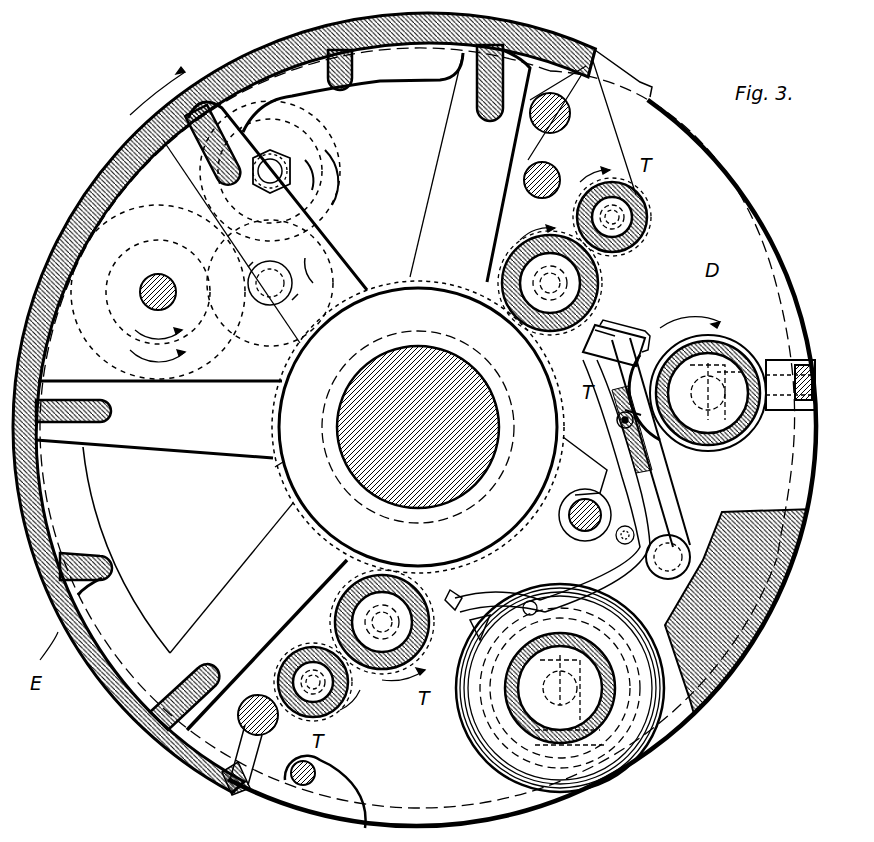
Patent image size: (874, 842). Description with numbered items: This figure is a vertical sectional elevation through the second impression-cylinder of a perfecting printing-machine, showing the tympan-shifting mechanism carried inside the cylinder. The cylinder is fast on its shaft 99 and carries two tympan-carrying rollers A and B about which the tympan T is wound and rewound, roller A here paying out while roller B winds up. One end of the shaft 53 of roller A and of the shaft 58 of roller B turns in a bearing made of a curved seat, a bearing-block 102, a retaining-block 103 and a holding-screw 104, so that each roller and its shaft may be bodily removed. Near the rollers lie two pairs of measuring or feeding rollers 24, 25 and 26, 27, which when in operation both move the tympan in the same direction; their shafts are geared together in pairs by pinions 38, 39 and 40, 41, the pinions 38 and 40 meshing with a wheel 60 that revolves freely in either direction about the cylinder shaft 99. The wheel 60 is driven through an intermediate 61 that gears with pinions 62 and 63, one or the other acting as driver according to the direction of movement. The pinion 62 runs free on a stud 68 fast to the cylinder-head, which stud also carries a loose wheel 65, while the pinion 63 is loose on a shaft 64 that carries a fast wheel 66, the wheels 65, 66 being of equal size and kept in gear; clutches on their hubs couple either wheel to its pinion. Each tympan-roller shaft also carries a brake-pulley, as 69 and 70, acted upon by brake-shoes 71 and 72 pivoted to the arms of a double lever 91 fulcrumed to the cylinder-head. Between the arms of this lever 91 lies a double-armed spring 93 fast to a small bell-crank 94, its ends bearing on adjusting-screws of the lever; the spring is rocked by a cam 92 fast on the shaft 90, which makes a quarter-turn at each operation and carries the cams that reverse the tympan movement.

The measuring or feeding roller 24 is at (340, 588).
The measuring or feeding roller 25 is at (290, 662).
The measuring or feeding roller 26 is at (598, 288).
The measuring or feeding roller 27 is at (647, 222).
The pinion 38 is at (444, 602).
The pinion 39 is at (278, 690).
The pinion 40 is at (508, 255).
The pinion 41 is at (616, 180).
The shaft of tympan-carrying roller A 53 is at (560, 688).
The shaft of tympan-carrying roller B 58 is at (697, 393).
The wheel 60 is at (280, 470).
The intermediate 61 is at (350, 252).
The pinion 62 is at (318, 143).
The pinion 63 is at (195, 340).
The shaft 64 is at (160, 273).
The wheel 65 is at (335, 117).
The wheel 66 is at (90, 322).
The stud 68 is at (270, 158).
The brake-pulley 69 is at (605, 650).
The brake-pulley 70 is at (730, 455).
The brake-shoe 71 is at (592, 640).
The brake-shoe 72 is at (635, 352).
The shaft 90 is at (585, 489).
The double lever 91 is at (630, 478).
The cam 92 is at (616, 540).
The double-armed spring 93 is at (578, 440).
The bell-crank 94 is at (660, 536).
The shaft 99 is at (415, 488).
The bearing-block 102 is at (740, 402).
The retaining-block 103 is at (783, 355).
The holding-screw 104 is at (816, 382).